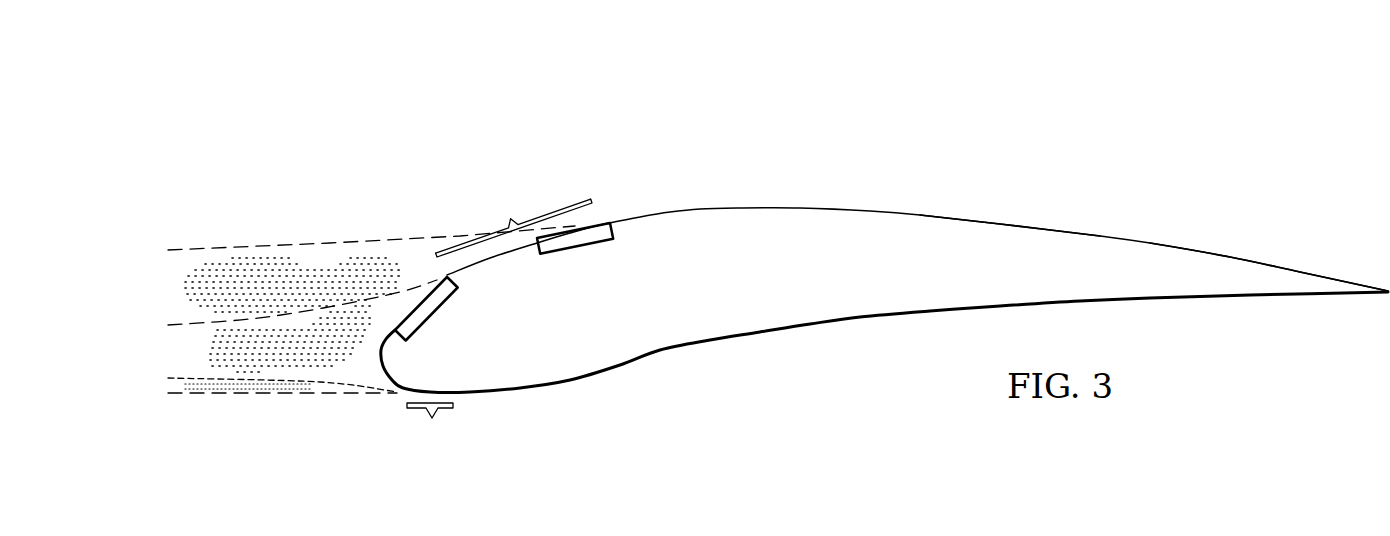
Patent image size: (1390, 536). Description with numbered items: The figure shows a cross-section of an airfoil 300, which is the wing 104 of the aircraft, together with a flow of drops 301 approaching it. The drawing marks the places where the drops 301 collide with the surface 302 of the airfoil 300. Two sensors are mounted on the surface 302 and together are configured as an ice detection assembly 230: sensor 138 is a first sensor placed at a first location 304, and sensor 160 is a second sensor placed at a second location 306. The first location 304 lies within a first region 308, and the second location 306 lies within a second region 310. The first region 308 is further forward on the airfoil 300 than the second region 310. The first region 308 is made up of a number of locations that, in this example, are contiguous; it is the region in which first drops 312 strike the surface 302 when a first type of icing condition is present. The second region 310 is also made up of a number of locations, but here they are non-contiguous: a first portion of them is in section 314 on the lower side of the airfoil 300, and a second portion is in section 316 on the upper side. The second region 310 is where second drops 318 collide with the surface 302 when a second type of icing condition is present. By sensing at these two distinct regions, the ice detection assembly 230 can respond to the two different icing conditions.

The wing 104 is at (1232, 261).
The sensor 138 is at (457, 290).
The sensor 160 is at (568, 255).
The ice detection assembly 230 is at (452, 88).
The airfoil 300 is at (862, 213).
The flow of drops 301 is at (165, 284).
The surface 302 is at (1037, 233).
The first location 304 is at (440, 323).
The second location 306 is at (610, 262).
The first region 308 is at (362, 343).
The second region 310 is at (513, 158).
The first drops 312 is at (217, 347).
The section 314 is at (431, 427).
The section 316 is at (514, 224).
The second drops 318 is at (270, 265).